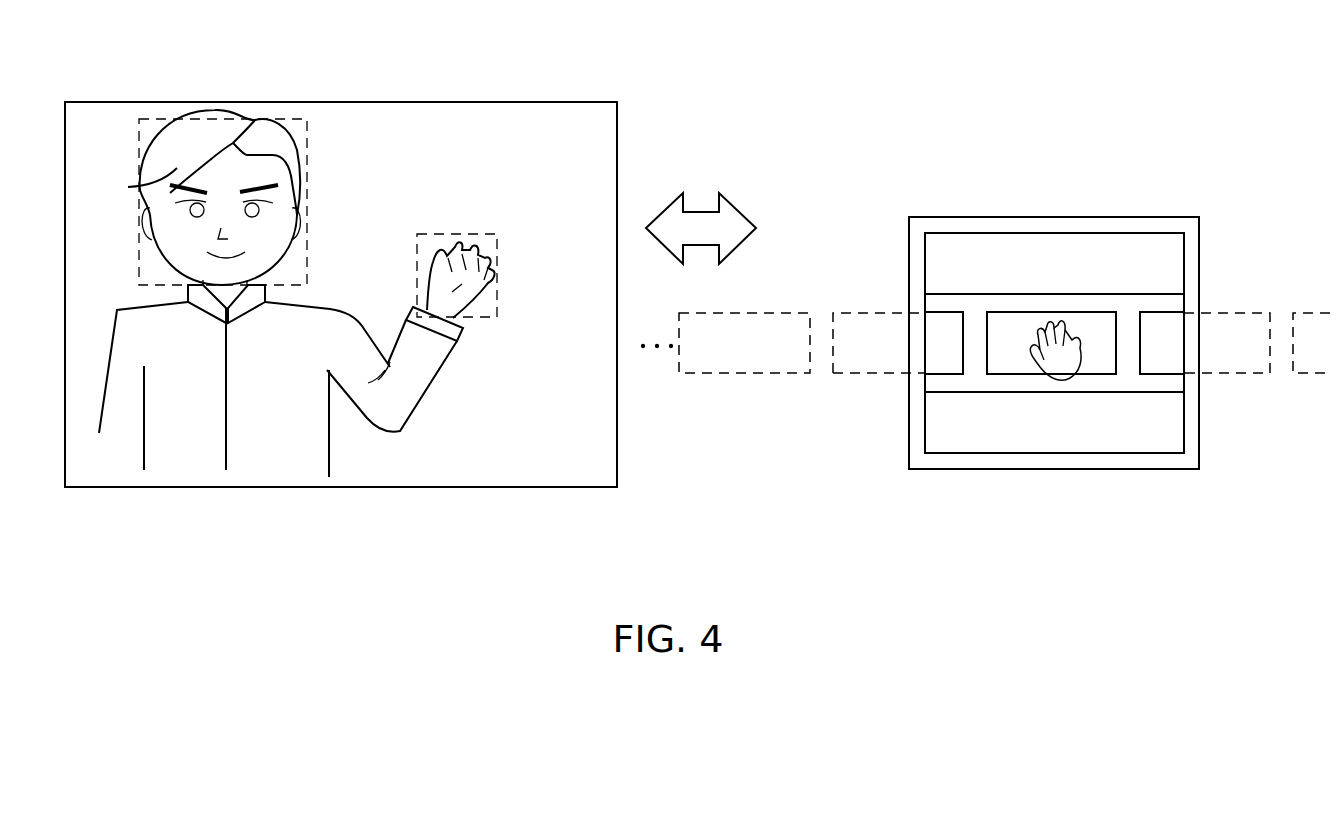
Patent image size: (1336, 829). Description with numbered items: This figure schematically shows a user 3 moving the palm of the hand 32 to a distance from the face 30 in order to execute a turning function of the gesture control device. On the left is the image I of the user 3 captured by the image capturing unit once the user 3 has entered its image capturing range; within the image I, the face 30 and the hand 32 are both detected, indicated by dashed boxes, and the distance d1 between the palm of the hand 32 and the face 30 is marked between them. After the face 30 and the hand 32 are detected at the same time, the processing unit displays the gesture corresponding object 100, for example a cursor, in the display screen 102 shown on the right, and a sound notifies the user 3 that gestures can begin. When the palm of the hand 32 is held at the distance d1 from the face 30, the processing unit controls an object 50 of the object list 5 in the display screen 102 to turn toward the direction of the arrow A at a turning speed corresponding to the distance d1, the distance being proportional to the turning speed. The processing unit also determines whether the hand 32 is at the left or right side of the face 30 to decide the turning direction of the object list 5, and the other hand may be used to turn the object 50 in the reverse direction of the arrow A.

The image I is at (578, 102).
The user 3 is at (322, 131).
The face 30 is at (237, 172).
The hand 32 is at (455, 293).
The distance d1 is at (307, 278).
The arrow A is at (980, 106).
The object list 5 is at (1160, 293).
The object 50 is at (1100, 312).
The gesture corresponding object 100 is at (1062, 368).
The display screen 102 is at (1034, 278).